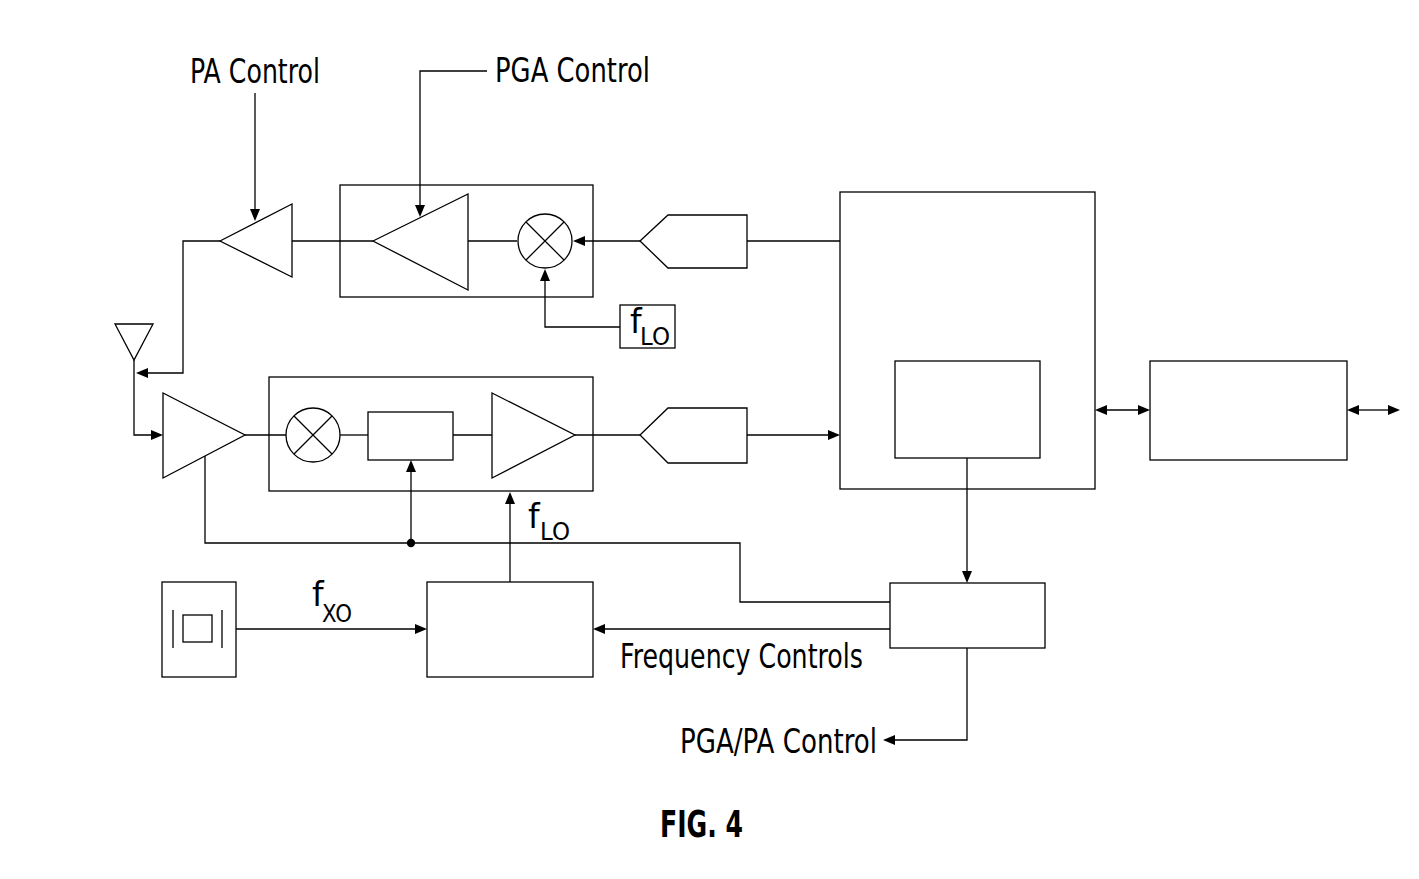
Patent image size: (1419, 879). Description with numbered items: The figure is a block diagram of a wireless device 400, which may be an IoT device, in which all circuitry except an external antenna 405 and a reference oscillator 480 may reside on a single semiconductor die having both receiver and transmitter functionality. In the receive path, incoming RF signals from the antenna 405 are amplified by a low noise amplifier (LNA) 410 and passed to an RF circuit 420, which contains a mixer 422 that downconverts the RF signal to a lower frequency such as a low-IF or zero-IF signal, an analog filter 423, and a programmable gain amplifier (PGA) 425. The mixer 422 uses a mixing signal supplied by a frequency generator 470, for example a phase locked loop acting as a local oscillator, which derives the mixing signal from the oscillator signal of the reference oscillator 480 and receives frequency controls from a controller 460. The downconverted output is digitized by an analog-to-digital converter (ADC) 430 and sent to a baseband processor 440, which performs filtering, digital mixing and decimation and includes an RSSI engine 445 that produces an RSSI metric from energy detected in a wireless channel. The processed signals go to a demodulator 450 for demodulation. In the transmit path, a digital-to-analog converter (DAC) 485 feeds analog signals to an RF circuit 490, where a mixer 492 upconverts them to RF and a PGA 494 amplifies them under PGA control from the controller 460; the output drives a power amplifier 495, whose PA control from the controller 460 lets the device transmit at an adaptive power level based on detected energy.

The wireless device 400 is at (112, 38).
The antenna 405 is at (133, 323).
The low noise amplifier (LNA) 410 is at (205, 413).
The RF circuit 420 is at (297, 377).
The mixer 422 is at (313, 408).
The analog filter 423 is at (410, 412).
The programmable gain amplifier (PGA) 425 is at (508, 398).
The analog-to-digital converter (ADC) 430 is at (708, 408).
The baseband processor 440 is at (967, 192).
The RSSI engine 445 is at (967, 361).
The demodulator 450 is at (1248, 361).
The controller 460 is at (1045, 613).
The frequency generator 470 is at (593, 595).
The reference oscillator 480 is at (162, 629).
The digital-to-analog converter (DAC) 485 is at (708, 215).
The RF circuit 490 is at (482, 183).
The mixer 492 is at (545, 213).
The programmable gain amplifier (PGA) 494 is at (395, 230).
The power amplifier 495 is at (233, 232).